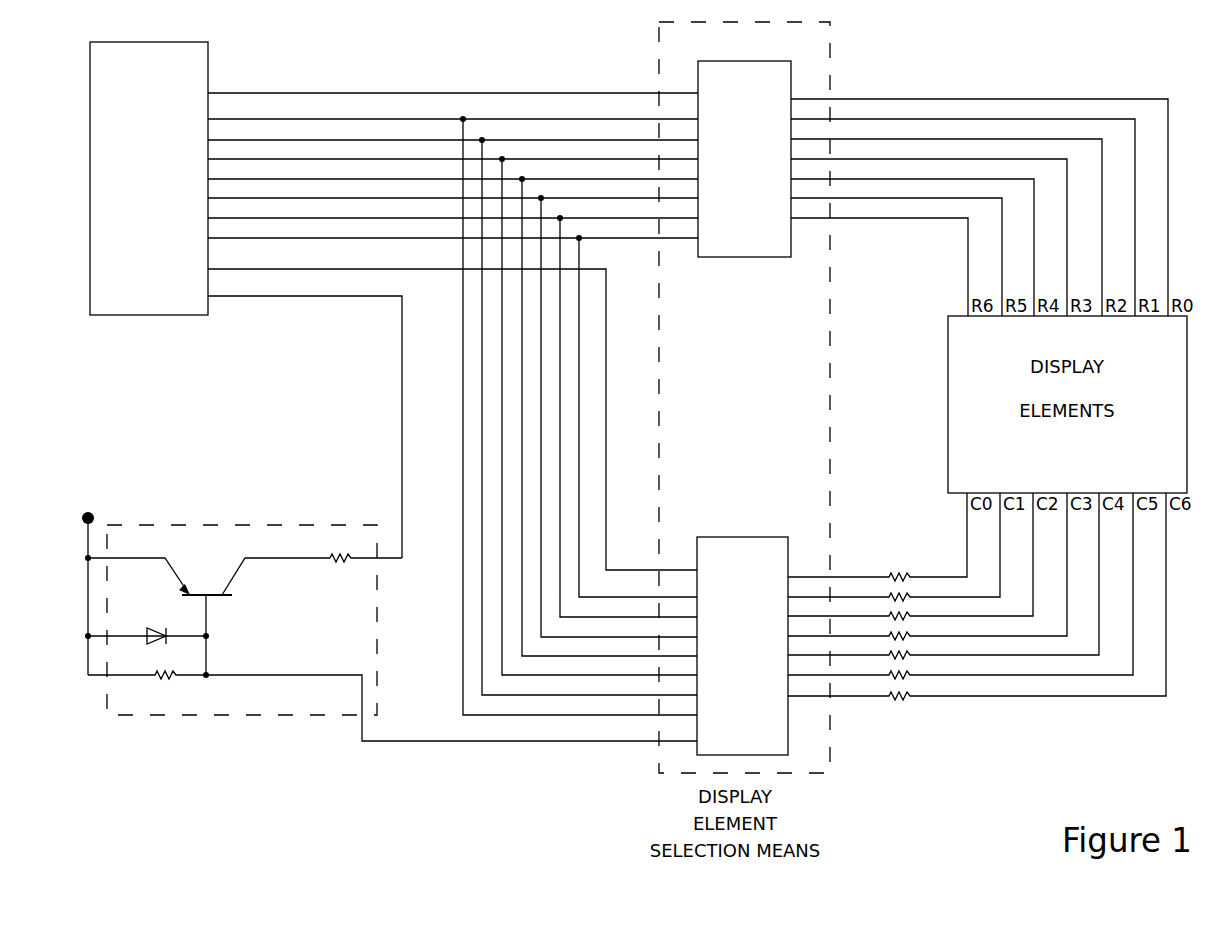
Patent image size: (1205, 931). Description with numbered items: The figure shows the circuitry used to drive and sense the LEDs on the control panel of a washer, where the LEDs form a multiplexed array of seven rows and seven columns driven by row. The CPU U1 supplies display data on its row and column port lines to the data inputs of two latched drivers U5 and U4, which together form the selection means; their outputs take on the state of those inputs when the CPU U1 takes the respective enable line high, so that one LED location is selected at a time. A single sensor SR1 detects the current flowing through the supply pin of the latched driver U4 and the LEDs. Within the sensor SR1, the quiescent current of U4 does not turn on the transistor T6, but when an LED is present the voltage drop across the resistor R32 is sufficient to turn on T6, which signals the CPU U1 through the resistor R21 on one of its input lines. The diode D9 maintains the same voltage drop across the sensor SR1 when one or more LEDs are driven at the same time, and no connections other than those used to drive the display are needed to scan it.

The CPU U1 is at (149, 165).
The latched driver U5 is at (744, 146).
The latched driver U4 is at (742, 634).
The sensor SR1 is at (223, 640).
The transistor T6 is at (209, 611).
The resistor R21 is at (351, 548).
The diode D9 is at (147, 628).
The resistor R32 is at (147, 665).